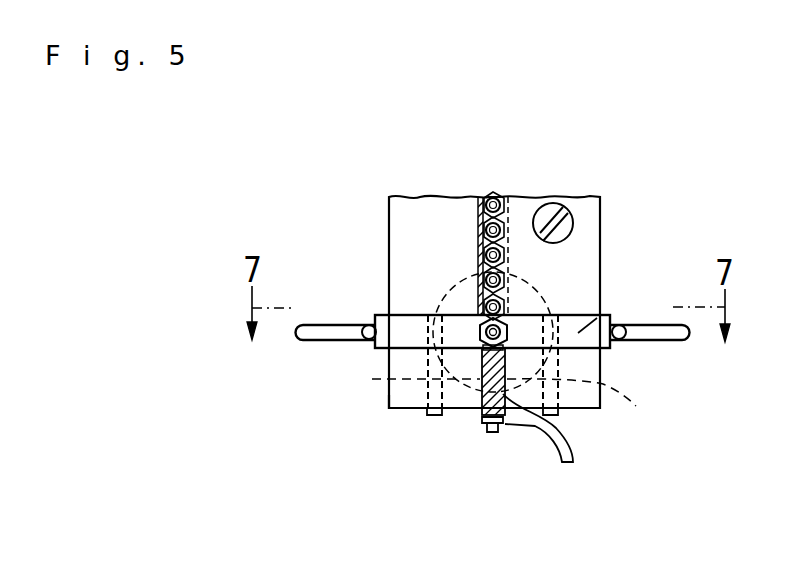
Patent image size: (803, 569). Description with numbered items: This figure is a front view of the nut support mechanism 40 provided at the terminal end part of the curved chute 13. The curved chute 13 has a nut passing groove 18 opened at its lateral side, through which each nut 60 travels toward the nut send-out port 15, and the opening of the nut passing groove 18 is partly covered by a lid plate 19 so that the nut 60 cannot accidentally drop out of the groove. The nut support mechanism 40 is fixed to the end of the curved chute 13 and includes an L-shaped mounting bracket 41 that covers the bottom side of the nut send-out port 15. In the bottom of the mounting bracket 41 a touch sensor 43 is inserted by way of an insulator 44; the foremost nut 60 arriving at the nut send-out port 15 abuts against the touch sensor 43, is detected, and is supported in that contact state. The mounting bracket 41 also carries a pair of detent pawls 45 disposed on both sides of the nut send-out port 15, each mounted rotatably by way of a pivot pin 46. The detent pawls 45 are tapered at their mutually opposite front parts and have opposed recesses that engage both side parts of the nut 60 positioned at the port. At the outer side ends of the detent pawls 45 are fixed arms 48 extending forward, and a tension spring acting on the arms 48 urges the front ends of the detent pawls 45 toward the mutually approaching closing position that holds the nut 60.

The curved chute 13 is at (453, 213).
The nut passing groove 18 is at (478, 197).
The lid plate 19 is at (588, 197).
The nut 60 is at (480, 253).
The nut send-out port 15 is at (480, 313).
The detent pawl 45 is at (407, 315).
The arm 48 is at (315, 338).
The pivot pin 46 is at (378, 379).
The mounting bracket 41 is at (385, 399).
The nut support mechanism 40 is at (404, 411).
The touch sensor 43 is at (483, 373).
The insulator 44 is at (537, 416).